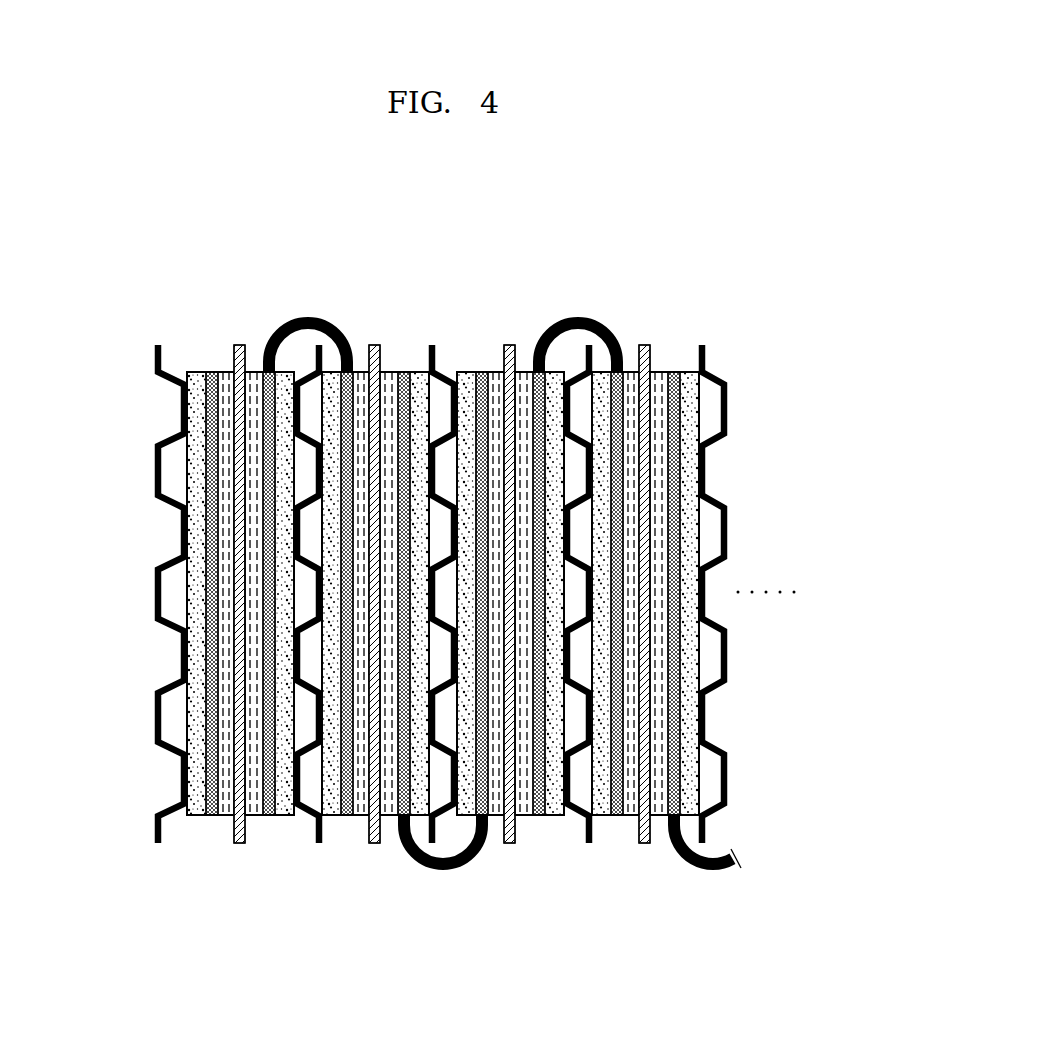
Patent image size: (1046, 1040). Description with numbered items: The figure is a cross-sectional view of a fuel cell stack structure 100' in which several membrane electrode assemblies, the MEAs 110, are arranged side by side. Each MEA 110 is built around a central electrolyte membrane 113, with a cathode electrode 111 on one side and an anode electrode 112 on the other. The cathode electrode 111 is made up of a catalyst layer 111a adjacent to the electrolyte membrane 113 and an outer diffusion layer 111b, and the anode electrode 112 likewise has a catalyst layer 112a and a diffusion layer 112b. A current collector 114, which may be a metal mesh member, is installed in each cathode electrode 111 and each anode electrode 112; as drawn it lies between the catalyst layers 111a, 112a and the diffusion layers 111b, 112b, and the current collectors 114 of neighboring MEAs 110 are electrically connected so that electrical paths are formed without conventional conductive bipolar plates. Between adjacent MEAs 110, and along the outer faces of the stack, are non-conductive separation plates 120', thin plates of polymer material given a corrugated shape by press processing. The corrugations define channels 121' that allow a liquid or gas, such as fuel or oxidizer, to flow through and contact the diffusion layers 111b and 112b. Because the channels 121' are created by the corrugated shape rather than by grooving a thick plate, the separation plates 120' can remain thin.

The fuel cell stack structure 100' is at (435, 610).
The MEA 110 is at (236, 921).
The cathode electrode 111 is at (230, 890).
The catalyst layer 111a is at (223, 817).
The diffusion layer 111b is at (188, 817).
The anode electrode 112 is at (345, 878).
The catalyst layer 112a is at (252, 817).
The diffusion layer 112b is at (287, 817).
The electrolyte membrane 113 is at (238, 345).
The current collector 114 is at (208, 371).
The non-conductive separation plate 120' is at (419, 570).
The channel 121' is at (106, 592).